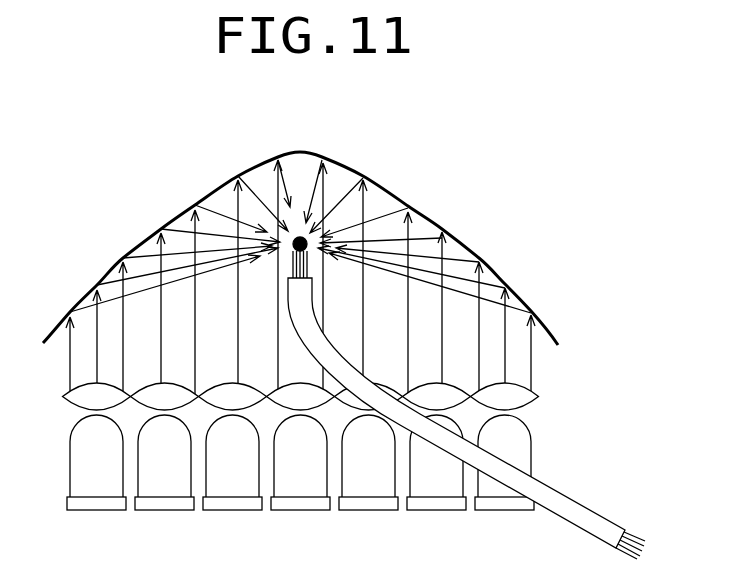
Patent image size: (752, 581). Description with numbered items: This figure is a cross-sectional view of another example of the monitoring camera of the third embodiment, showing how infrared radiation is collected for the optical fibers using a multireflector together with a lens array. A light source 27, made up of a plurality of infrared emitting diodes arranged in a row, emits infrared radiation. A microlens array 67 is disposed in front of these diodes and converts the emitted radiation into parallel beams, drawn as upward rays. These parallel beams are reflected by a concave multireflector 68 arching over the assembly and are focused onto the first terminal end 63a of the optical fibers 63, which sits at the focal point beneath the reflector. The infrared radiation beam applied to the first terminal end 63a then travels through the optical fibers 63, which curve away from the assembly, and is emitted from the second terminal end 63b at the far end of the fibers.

The concave multireflector 68 is at (298, 150).
The first terminal end 63a is at (400, 238).
The microlens array 67 is at (540, 401).
The optical fibers 63 is at (559, 491).
The second terminal end 63b is at (637, 531).
The light source 27 is at (201, 494).